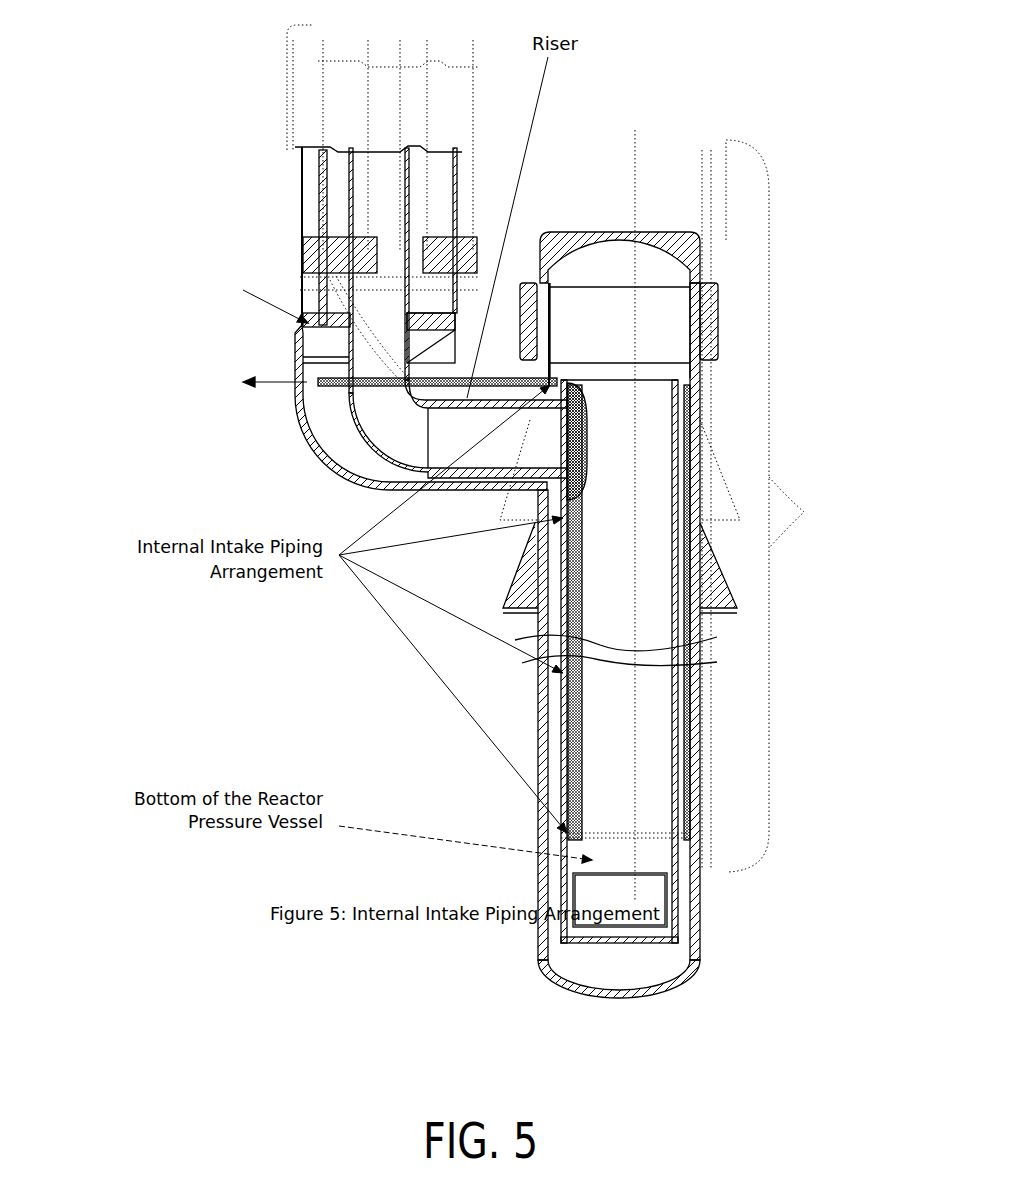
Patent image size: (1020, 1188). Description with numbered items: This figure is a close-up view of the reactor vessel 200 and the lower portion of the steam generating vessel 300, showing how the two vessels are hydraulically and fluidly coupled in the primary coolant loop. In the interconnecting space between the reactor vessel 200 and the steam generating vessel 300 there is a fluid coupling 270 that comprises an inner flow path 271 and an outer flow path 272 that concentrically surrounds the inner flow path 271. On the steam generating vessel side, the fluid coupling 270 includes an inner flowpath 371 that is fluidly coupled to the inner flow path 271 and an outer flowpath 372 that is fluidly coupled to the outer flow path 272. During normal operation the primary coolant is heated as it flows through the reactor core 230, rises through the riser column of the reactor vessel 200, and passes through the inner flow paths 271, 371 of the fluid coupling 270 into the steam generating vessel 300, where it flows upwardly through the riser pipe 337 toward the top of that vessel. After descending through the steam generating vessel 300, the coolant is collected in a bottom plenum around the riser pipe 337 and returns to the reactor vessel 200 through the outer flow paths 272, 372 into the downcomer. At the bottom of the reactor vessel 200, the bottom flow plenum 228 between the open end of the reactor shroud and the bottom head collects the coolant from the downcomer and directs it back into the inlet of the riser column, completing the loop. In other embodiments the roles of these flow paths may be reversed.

The steam generating vessel 300 is at (302, 193).
The riser pipe 337 is at (408, 177).
The outer flow path 272 is at (494, 320).
The outer flowpath 372 is at (481, 320).
The fluid coupling 270 is at (488, 356).
The inner flow path 271 is at (677, 649).
The inner flowpath 371 is at (477, 423).
The reactor vessel 200 is at (644, 591).
The reactor core 230 is at (593, 900).
The bottom flow plenum 228 is at (623, 978).